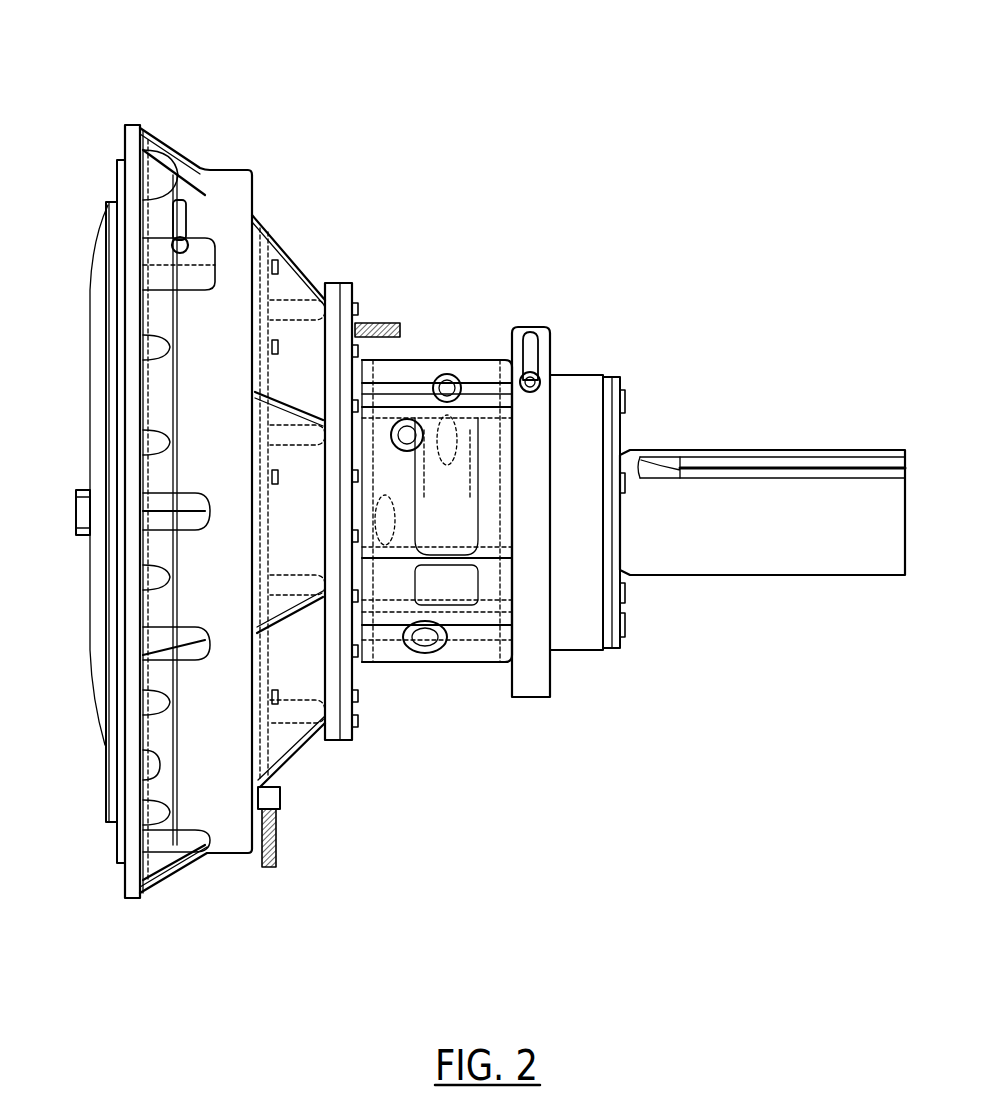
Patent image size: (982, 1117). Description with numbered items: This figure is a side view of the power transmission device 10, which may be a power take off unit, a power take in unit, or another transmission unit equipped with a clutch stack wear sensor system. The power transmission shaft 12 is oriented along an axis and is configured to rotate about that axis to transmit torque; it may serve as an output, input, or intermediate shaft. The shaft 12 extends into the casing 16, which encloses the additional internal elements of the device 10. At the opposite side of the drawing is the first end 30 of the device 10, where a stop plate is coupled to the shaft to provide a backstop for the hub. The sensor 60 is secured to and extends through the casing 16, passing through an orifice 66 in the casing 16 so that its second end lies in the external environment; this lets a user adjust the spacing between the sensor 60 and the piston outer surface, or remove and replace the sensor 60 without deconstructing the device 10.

The power transmission device 10 is at (660, 60).
The power transmission shaft 12 is at (843, 550).
The casing 16 is at (230, 185).
The first end 30 is at (64, 580).
The sensor 60 is at (278, 843).
The orifice 66 is at (298, 778).